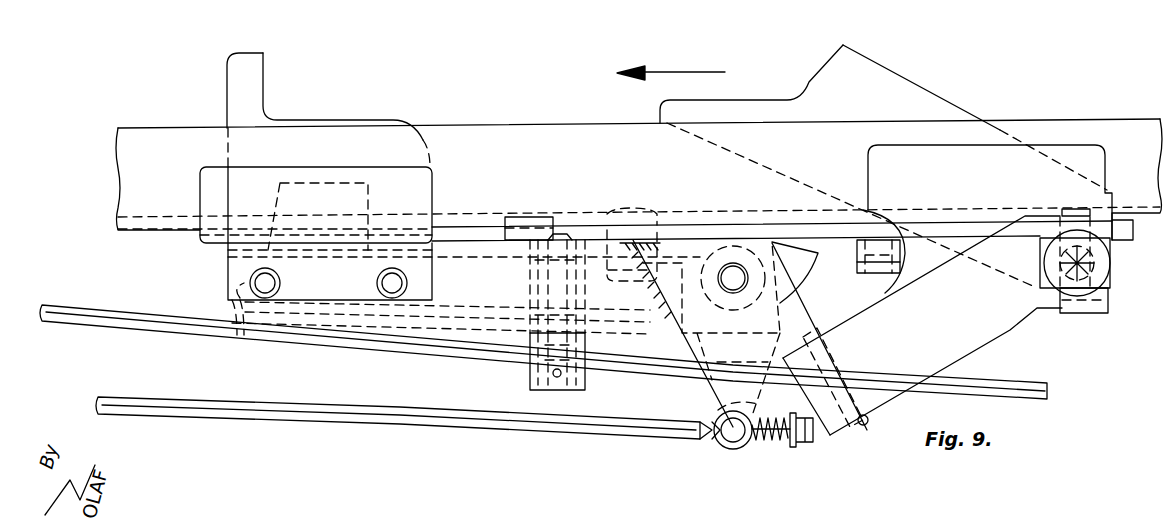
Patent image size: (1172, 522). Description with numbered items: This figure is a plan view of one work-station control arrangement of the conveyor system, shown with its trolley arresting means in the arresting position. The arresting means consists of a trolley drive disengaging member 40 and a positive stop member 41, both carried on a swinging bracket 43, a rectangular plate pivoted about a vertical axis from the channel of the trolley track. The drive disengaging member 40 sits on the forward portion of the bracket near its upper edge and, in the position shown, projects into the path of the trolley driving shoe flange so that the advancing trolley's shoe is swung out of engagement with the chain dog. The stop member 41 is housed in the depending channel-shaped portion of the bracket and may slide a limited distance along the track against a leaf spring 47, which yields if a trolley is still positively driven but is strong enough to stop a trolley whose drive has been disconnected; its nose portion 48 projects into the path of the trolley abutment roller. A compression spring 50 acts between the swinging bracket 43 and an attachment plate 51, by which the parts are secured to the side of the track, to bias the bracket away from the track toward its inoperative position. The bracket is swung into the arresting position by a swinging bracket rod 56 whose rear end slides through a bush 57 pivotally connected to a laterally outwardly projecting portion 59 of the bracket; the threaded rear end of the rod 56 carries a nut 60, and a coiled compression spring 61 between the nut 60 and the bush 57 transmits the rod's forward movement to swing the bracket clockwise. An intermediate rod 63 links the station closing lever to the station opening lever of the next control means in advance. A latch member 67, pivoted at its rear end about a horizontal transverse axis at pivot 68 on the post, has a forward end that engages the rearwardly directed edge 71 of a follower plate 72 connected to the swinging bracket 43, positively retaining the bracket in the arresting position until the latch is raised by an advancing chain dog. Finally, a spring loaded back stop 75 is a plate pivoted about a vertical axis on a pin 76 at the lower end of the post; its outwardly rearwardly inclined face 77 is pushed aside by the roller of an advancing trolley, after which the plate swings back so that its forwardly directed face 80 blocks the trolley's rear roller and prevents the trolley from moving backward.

The trolley drive disengaging member 40 is at (206, 192).
The positive stop member 41 is at (258, 94).
The swinging bracket 43 is at (283, 328).
The leaf spring 47 is at (475, 325).
The nose portion 48 is at (263, 50).
The compression spring 50 is at (552, 287).
The attachment plate 51 is at (472, 233).
The swinging bracket rod 56 is at (485, 422).
The bush 57 is at (737, 450).
The laterally outwardly projecting portion 59 is at (733, 388).
The nut 60 is at (803, 445).
The coiled compression spring 61 is at (763, 442).
The intermediate rod 63 is at (183, 318).
The latch member 67 is at (983, 338).
The pivot 68 is at (1106, 300).
The rearwardly directed edge 71 is at (810, 318).
The follower plate 72 is at (780, 303).
The spring loaded back stop 75 is at (923, 108).
The pin 76 is at (1095, 263).
The outwardly rearwardly inclined face 77 is at (913, 83).
The forwardly directed face 80 is at (822, 62).